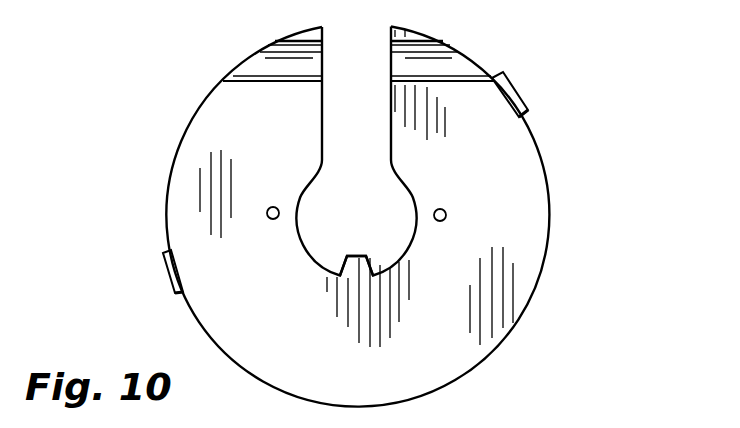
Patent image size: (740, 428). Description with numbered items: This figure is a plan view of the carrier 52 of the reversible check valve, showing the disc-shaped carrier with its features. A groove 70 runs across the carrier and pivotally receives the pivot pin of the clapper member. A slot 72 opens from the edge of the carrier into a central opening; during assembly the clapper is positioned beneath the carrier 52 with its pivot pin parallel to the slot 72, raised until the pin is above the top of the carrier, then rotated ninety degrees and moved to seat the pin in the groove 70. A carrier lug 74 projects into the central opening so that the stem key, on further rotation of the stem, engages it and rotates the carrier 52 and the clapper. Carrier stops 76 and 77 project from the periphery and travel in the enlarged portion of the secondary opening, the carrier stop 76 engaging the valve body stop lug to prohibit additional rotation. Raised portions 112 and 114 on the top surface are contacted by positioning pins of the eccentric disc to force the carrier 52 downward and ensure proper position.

The carrier 52 is at (525, 177).
The groove 70 is at (440, 60).
The slot 72 is at (363, 45).
The carrier lug 74 is at (352, 268).
The carrier stop 76 is at (167, 272).
The carrier stop 77 is at (512, 88).
The raised portion 112 is at (275, 221).
The raised portion 114 is at (447, 215).